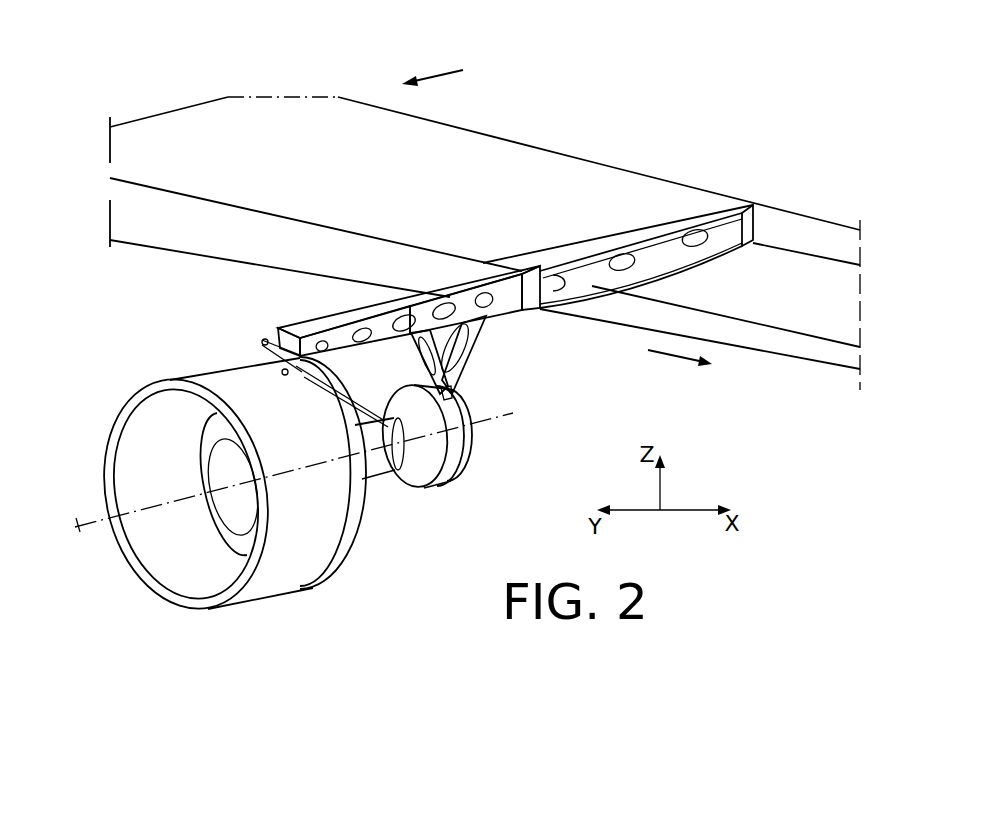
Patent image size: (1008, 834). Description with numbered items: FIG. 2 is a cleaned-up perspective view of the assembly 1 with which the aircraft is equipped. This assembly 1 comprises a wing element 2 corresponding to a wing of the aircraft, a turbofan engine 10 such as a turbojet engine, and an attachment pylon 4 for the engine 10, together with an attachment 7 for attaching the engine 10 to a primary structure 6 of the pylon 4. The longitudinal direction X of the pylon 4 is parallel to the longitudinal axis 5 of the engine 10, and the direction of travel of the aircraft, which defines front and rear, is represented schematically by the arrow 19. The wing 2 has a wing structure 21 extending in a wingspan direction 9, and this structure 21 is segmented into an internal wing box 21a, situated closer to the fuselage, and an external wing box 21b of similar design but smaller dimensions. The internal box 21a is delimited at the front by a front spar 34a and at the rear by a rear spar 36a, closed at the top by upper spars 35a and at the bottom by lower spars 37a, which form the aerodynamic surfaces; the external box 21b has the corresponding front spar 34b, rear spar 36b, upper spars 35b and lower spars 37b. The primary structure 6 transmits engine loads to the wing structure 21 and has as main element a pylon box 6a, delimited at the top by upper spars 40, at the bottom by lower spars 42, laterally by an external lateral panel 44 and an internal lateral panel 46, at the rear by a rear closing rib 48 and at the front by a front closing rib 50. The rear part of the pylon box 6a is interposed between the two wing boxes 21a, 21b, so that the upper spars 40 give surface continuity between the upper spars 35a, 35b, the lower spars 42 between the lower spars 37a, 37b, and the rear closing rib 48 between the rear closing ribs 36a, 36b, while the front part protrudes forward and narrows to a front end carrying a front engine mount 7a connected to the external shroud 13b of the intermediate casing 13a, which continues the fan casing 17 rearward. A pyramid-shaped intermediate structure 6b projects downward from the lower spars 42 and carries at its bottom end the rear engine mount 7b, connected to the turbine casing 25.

The assembly 1 is at (452, 108).
The wing element 2 is at (703, 176).
The attachment pylon 4 is at (294, 323).
The longitudinal axis 5 is at (78, 532).
The primary structure 6 is at (370, 348).
The pylon box 6a is at (314, 316).
The intermediate structure 6b is at (468, 352).
The attachment 7 is at (518, 433).
The front engine mount 7a is at (460, 400).
The rear engine mount 7b is at (454, 473).
The wingspan direction 9 is at (673, 362).
The turbofan engine 10 is at (194, 638).
The intermediate casing 13a is at (332, 524).
The external shroud 13b is at (328, 570).
The fan casing 17 is at (280, 588).
The arrow 19 is at (428, 74).
The wing structure 21 is at (482, 150).
The internal wing box 21a is at (222, 163).
The external wing box 21b is at (812, 308).
The turbine casing 25 is at (457, 482).
The front spar 34a is at (180, 222).
The front spar 34b is at (778, 346).
The upper spars 35a is at (150, 162).
The upper spars 35b is at (822, 280).
The rear spar 36a is at (562, 152).
The rear spar 36b is at (796, 215).
The lower spars 37a is at (130, 246).
The lower spars 37b is at (733, 349).
The upper spars 40 is at (380, 306).
The lower spars 42 is at (332, 352).
The external lateral panel 44 is at (505, 318).
The internal lateral panel 46 is at (276, 343).
The rear closing rib 48 is at (740, 192).
The front closing rib 50 is at (284, 355).